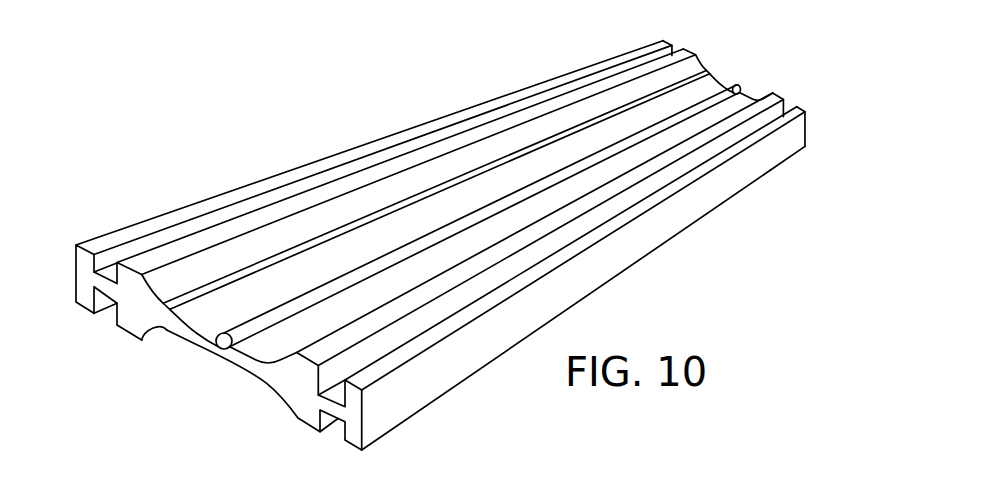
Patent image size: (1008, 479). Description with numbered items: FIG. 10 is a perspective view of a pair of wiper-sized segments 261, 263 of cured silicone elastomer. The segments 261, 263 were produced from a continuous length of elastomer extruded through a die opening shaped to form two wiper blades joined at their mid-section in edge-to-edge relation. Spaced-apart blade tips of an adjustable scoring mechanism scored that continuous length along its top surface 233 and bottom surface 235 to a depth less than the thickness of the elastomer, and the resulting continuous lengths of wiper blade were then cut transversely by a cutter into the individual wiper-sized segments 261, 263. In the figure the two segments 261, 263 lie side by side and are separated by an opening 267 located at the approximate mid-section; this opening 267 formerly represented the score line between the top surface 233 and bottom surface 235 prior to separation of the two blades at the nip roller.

The top surface 233 is at (195, 278).
The bottom surface 235 is at (157, 331).
The wiper-sized segment 261 is at (453, 167).
The wiper-sized segment 263 is at (548, 230).
The opening 267 is at (219, 346).